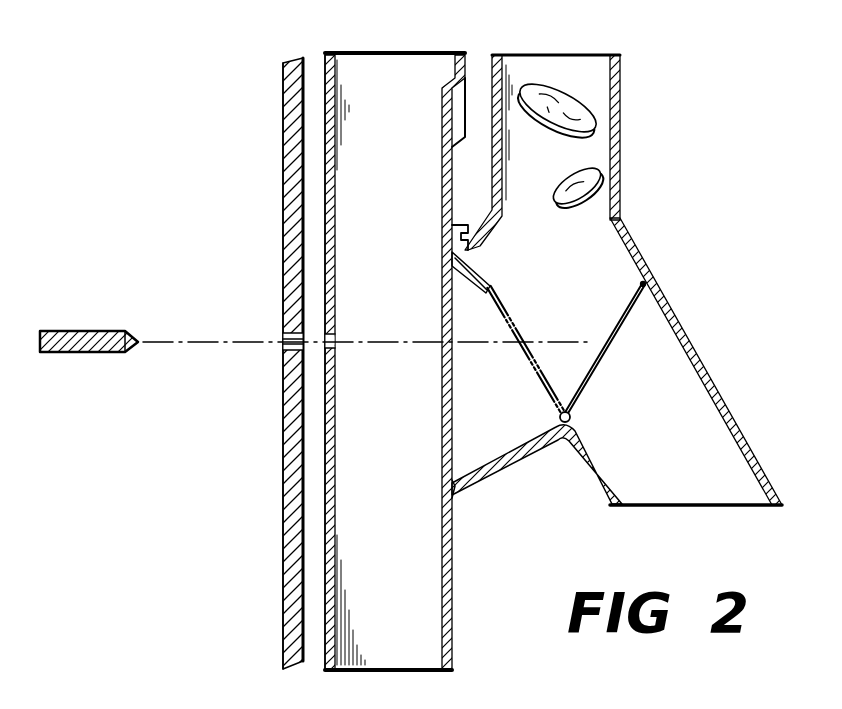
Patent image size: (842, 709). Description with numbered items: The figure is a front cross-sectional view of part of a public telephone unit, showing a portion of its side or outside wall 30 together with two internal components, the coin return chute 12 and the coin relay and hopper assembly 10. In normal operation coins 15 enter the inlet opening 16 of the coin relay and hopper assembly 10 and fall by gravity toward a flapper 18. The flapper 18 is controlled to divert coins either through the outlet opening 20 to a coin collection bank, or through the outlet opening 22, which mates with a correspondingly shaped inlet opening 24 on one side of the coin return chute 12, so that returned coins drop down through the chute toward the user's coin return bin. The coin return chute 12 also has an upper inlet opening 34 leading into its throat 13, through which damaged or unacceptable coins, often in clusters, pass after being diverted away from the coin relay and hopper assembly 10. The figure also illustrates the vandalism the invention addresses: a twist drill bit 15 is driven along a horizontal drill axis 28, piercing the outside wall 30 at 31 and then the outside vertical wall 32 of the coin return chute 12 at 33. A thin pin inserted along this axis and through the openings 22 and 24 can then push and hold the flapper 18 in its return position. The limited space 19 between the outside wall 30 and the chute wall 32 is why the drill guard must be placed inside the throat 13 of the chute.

The coin relay and hopper assembly 10 is at (637, 248).
The coin return chute 12 is at (326, 53).
The throat 13 is at (350, 563).
The coins / high-speed twist drill bit 15 is at (92, 331).
The inlet opening 16 is at (560, 63).
The flapper 18 is at (604, 352).
The space between outside wall and chute wall 19 is at (307, 493).
The outlet opening 20 is at (672, 492).
The outlet opening 22 is at (463, 447).
The inlet opening 24 is at (455, 500).
The drill axis 28 is at (410, 350).
The side wall / outside wall 30 is at (283, 447).
The pierced point in outside wall 31 is at (283, 338).
The outside vertical wall 32 is at (324, 415).
The pierced point in chute wall 33 is at (335, 337).
The upper inlet opening 34 is at (377, 67).